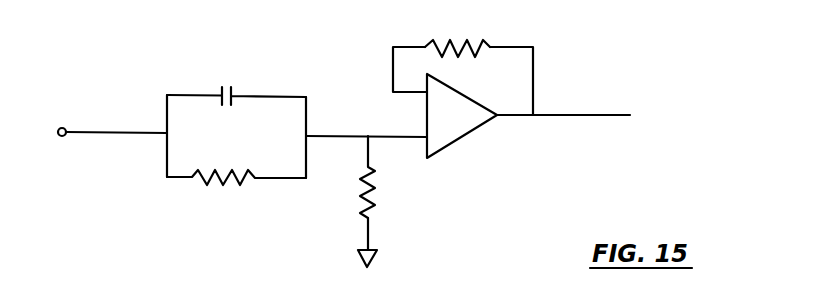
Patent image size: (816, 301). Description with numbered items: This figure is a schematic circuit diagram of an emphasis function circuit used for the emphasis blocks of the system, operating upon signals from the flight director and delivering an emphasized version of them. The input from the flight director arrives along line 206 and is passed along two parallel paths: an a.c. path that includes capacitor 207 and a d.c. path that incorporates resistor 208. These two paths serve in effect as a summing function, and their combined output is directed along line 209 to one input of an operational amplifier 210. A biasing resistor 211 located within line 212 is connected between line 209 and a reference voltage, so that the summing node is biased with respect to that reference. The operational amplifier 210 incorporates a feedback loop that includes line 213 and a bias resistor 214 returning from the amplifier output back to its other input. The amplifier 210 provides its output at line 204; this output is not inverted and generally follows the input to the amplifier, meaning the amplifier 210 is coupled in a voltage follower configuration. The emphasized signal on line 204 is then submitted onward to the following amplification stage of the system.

The line 204 is at (558, 117).
The line 206 is at (78, 127).
The capacitor 207 is at (232, 87).
The resistor 208 is at (241, 182).
The line 209 is at (329, 133).
The operational amplifier 210 is at (450, 142).
The biasing resistor 211 is at (375, 191).
The line 212 is at (368, 237).
The line 213 is at (525, 47).
The bias resistor 214 is at (448, 43).